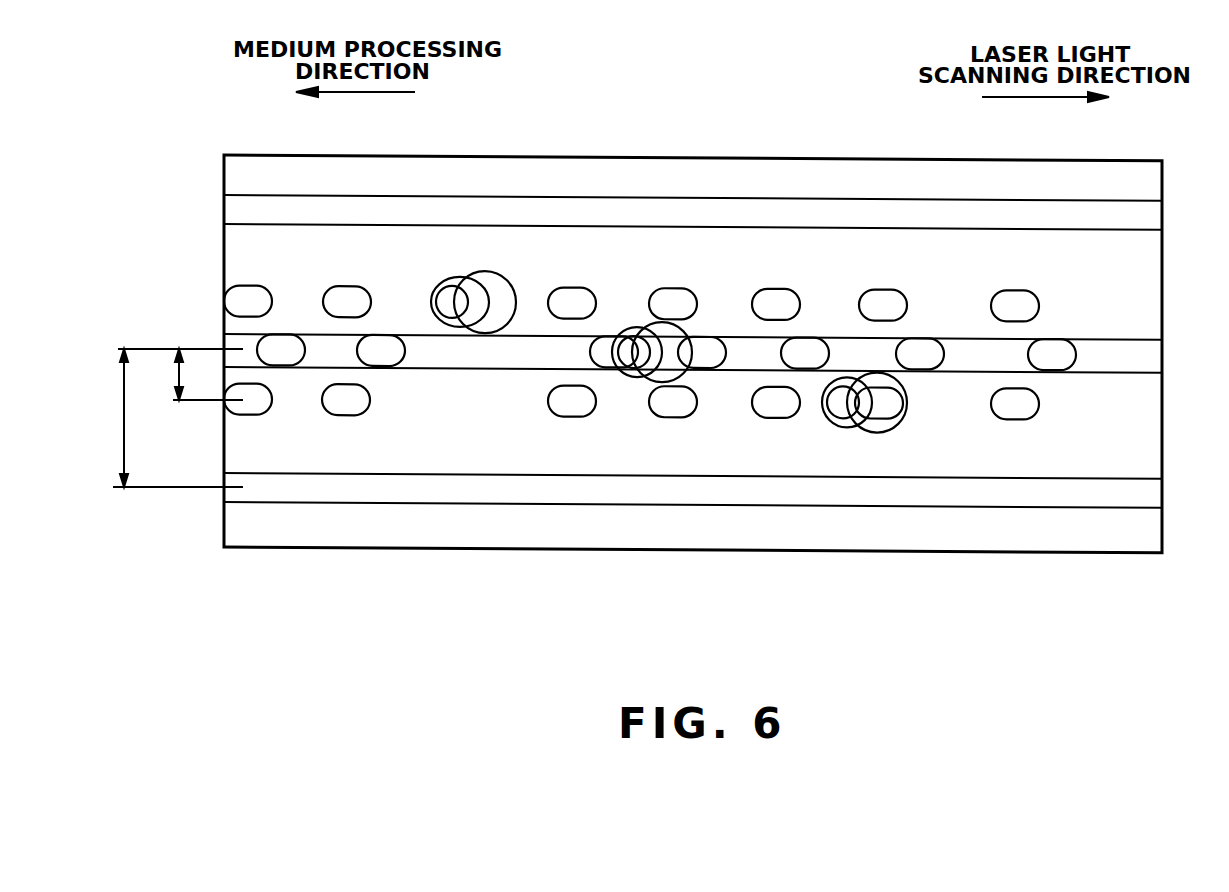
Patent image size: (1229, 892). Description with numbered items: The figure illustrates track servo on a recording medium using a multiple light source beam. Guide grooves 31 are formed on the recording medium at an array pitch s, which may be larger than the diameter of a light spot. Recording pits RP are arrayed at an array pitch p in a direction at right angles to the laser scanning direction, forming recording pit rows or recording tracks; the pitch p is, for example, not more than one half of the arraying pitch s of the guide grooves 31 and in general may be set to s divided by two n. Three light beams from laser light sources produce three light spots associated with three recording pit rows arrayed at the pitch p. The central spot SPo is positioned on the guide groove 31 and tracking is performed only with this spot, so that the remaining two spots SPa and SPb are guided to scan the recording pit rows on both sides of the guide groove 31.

The guide groove 31 is at (1137, 223).
The recording pit RP is at (1065, 368).
The light spot SPa is at (497, 271).
The central light spot SPo is at (694, 324).
The light spot SPb is at (866, 374).
The array pitch of guide grooves s is at (170, 418).
The array pitch of recording pits p is at (198, 374).